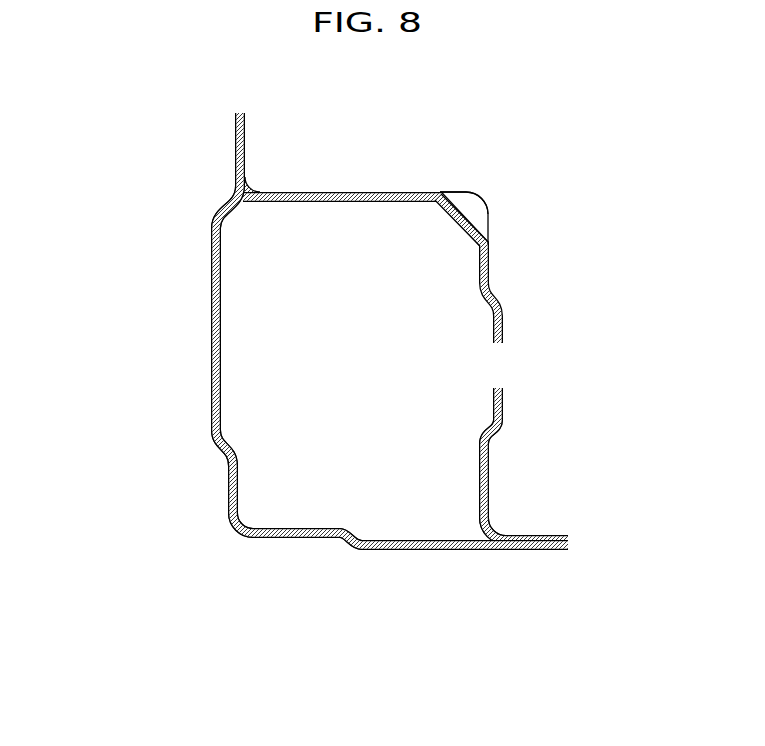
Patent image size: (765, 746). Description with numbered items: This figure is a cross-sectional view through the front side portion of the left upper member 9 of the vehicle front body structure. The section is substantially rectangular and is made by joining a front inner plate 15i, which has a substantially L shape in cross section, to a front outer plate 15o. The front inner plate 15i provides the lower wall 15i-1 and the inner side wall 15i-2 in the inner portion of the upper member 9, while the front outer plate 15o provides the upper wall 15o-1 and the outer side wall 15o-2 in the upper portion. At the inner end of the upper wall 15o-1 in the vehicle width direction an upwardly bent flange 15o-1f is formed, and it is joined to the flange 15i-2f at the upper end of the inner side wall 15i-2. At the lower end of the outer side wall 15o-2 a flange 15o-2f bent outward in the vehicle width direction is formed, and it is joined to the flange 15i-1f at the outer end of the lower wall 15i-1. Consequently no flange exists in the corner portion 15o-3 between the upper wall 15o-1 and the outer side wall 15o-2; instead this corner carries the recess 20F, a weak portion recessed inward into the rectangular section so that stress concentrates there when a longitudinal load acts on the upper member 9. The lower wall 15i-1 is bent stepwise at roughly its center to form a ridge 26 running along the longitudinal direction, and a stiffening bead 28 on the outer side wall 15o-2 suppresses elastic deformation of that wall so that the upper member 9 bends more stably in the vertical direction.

The upper member 9 is at (488, 157).
The front inner plate 15i is at (206, 328).
The lower wall 15i-1 is at (303, 538).
The flange 15i-1f is at (540, 551).
The inner side wall 15i-2 is at (210, 402).
The flange 15i-2f is at (233, 162).
The front outer plate 15o is at (511, 309).
The upper wall 15o-1 is at (362, 192).
The flange 15o-1f is at (247, 138).
The outer side wall 15o-2 is at (488, 462).
The flange 15o-2f is at (543, 536).
The corner portion 15o-3 is at (476, 194).
The recess 20F is at (463, 210).
The ridge 26 is at (348, 548).
The stiffening bead 28 is at (501, 402).